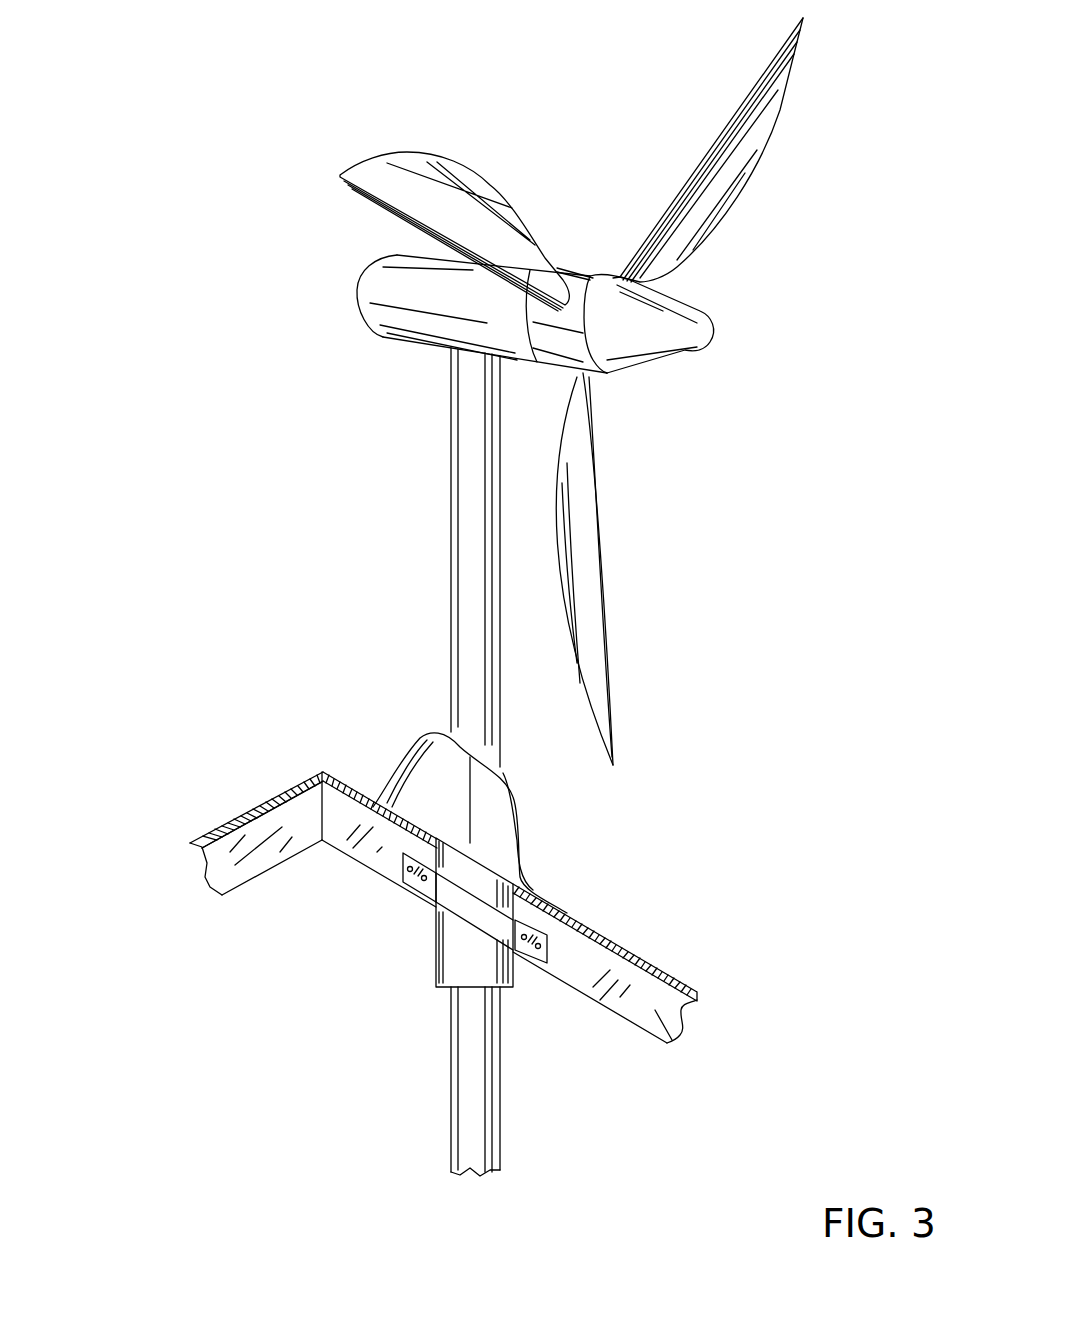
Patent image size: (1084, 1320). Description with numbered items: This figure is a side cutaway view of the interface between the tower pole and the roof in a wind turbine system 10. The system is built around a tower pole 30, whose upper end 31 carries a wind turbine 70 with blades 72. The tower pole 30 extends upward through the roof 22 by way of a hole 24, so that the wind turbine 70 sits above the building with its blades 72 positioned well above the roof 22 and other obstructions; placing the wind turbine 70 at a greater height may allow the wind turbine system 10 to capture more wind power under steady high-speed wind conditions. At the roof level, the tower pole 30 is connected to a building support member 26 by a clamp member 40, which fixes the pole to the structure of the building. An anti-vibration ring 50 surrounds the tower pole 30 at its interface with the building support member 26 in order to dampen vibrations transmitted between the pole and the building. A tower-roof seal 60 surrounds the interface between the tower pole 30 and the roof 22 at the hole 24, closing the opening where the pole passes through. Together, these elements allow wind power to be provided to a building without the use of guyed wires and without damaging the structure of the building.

The wind turbine system 10 is at (233, 112).
The wind turbine 70 is at (590, 277).
The blades 72 is at (763, 130).
The tower pole 30 is at (449, 493).
The upper end 31 is at (470, 427).
The tower-roof seal 60 is at (522, 828).
The roof 22 is at (640, 960).
The hole 24 is at (543, 893).
The building support member 26 is at (662, 1003).
The clamp member 40 is at (467, 907).
The anti-vibration ring 50 is at (433, 972).